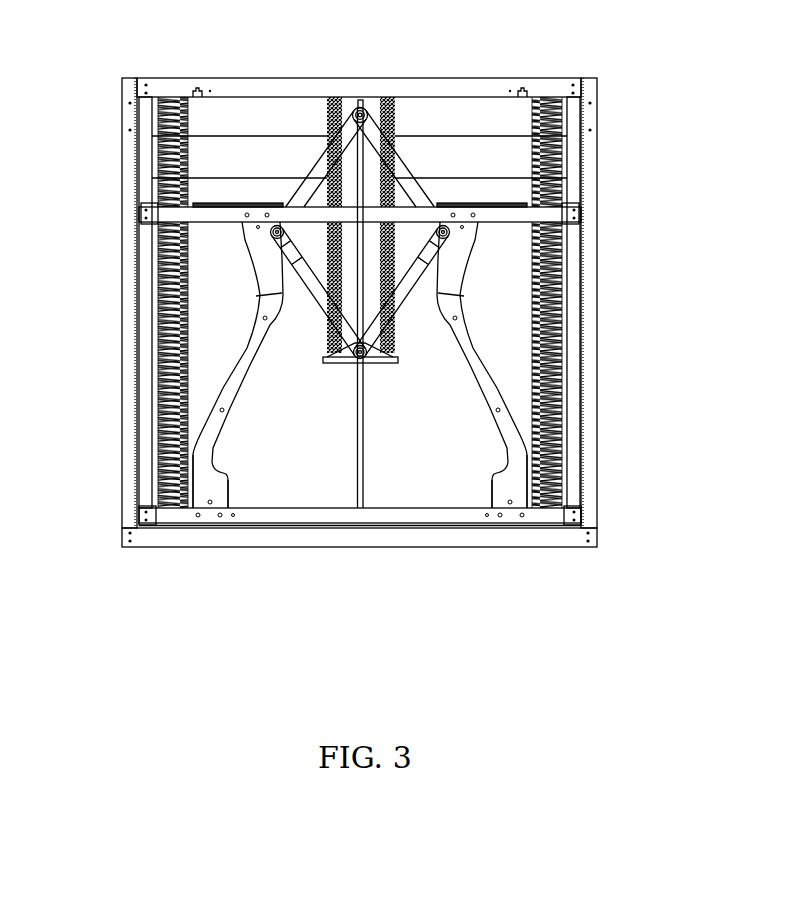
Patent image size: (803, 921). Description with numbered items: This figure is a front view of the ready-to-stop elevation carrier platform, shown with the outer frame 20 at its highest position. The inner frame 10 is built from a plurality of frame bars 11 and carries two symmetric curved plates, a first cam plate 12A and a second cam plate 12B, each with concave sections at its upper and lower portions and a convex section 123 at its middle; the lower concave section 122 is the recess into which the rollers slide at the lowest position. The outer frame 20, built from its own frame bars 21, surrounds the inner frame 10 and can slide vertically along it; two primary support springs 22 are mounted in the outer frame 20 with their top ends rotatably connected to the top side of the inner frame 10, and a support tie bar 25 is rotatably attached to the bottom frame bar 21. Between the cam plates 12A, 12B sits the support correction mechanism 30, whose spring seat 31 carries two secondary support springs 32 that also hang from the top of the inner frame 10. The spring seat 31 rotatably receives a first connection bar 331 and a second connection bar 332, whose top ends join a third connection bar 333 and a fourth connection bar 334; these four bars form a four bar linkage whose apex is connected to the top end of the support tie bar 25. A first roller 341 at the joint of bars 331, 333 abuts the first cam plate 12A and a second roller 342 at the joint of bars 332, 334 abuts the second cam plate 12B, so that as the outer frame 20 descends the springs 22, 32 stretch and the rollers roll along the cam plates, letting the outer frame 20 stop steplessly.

The inner frame 10 is at (293, 76).
The frame bar 11 is at (360, 77).
The first cam plate 12A is at (235, 393).
The second cam plate 12B is at (485, 393).
The concave section 122 is at (214, 465).
The convex section 123 is at (258, 295).
The outer frame 20 is at (256, 548).
The frame bar 21 is at (130, 405).
The primary support spring 22 is at (158, 167).
The support tie bar 25 is at (364, 440).
The support correction mechanism 30 is at (284, 189).
The spring seat 31 is at (381, 364).
The secondary support spring 32 is at (327, 117).
The first connection bar 331 is at (326, 312).
The second connection bar 332 is at (394, 312).
The third connection bar 333 is at (317, 173).
The fourth connection bar 334 is at (407, 173).
The first roller 341 is at (267, 233).
The second roller 342 is at (453, 233).